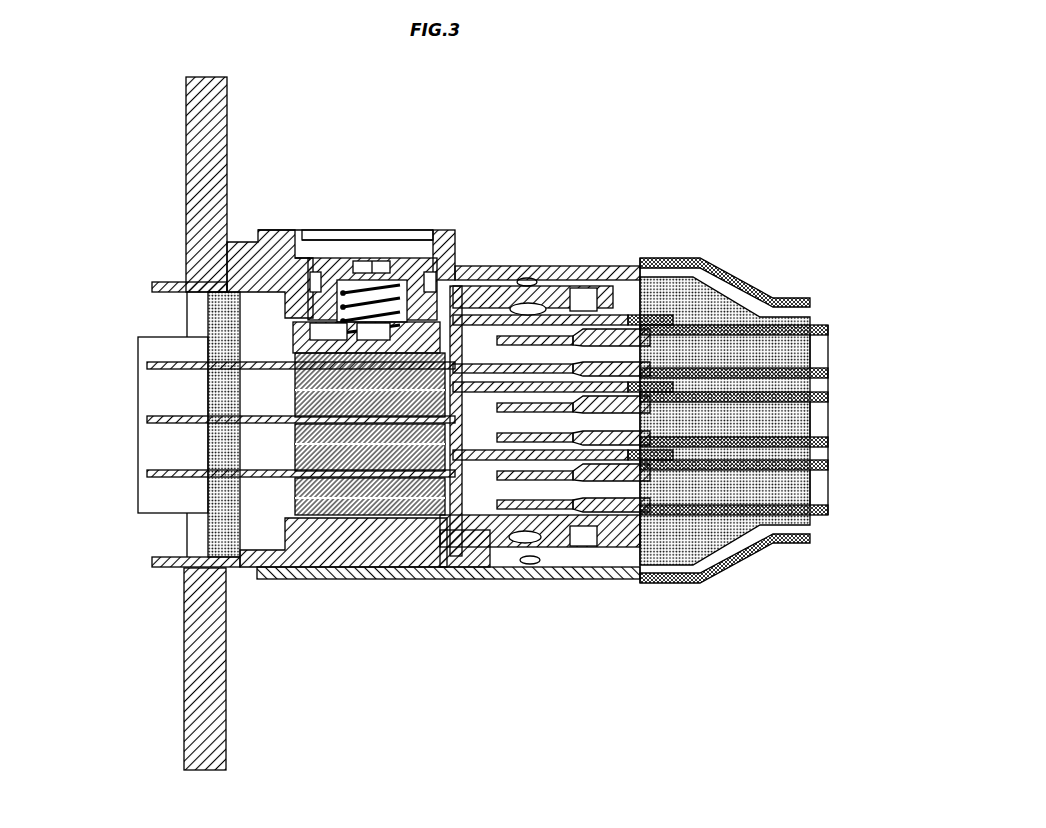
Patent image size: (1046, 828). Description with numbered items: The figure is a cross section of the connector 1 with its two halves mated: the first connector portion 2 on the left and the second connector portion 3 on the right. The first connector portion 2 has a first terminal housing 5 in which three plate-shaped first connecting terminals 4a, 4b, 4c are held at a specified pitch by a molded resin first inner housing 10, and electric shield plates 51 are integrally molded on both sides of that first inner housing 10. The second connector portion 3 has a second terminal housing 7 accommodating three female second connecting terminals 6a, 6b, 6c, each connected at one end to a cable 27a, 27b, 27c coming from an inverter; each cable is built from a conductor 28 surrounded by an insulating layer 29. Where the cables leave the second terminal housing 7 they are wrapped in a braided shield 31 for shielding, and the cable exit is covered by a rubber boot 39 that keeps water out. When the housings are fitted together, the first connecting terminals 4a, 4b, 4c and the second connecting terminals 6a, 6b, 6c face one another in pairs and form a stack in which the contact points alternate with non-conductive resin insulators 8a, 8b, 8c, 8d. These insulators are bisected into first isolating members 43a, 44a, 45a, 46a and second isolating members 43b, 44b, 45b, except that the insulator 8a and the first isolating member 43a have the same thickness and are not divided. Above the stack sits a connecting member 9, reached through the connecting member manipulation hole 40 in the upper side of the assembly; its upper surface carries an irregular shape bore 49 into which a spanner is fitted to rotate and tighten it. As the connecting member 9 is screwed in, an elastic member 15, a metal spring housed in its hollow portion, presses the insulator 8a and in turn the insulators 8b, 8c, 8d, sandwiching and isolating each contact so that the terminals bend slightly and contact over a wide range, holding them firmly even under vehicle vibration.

The connector 1 is at (663, 97).
The first connector portion 2 is at (172, 282).
The second connector portion 3 is at (578, 262).
The first connecting terminal 4a is at (147, 364).
The first connecting terminal 4b is at (147, 418).
The first connecting terminal 4c is at (147, 472).
The first terminal housing 5 is at (242, 241).
The second connecting terminal 6a is at (462, 330).
The second connecting terminal 6b is at (475, 430).
The second connecting terminal 6c is at (528, 565).
The second terminal housing 7 is at (509, 265).
The insulator 8a is at (68, 318).
The insulator 8b is at (68, 371).
The insulator 8c is at (68, 424).
The insulator 8d is at (68, 478).
The connecting member 9 is at (414, 254).
The first inner housing 10 is at (208, 535).
The elastic member 15 is at (350, 285).
The cable 27a is at (831, 331).
The cable 27b is at (831, 398).
The cable 27c is at (831, 466).
The conductor 28 is at (828, 348).
The insulating layer 29 is at (828, 374).
The braided shield 31 is at (728, 296).
The rubber boot 39 is at (705, 259).
The connecting member manipulation hole 40 is at (318, 232).
The first isolating member 43a is at (295, 323).
The second isolating member 43b is at (295, 378).
The first isolating member 44a is at (295, 395).
The second isolating member 44b is at (295, 432).
The first isolating member 45a is at (295, 450).
The second isolating member 45b is at (295, 485).
The first isolating member 46a is at (295, 503).
The irregular shape bore 49 is at (372, 262).
The electric shield plate 51 is at (140, 347).